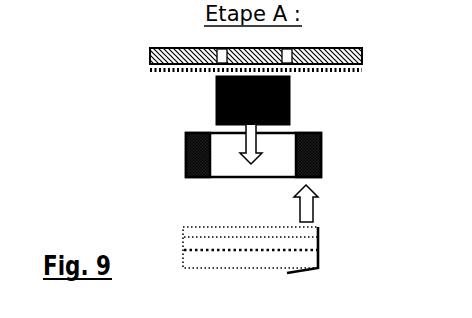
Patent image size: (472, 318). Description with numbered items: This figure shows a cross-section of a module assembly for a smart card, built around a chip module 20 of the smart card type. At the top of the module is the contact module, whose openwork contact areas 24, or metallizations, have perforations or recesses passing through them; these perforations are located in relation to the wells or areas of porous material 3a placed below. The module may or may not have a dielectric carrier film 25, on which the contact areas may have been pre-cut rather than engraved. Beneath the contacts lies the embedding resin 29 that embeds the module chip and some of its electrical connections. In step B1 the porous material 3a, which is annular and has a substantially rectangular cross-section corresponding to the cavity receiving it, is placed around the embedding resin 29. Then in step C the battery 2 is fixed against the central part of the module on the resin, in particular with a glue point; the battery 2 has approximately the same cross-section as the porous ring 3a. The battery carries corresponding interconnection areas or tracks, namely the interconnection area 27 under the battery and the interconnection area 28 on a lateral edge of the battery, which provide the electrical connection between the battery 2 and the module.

The chip module 20 is at (372, 43).
The openwork contact areas 24 is at (352, 45).
The dielectric carrier film 25 is at (149, 70).
The embedding resin 29 is at (215, 92).
The porous material 3a is at (186, 155).
The step B1 is at (254, 162).
The step C is at (320, 203).
The battery 2 is at (167, 240).
The interconnection area 28 is at (324, 232).
The interconnection area 27 is at (295, 277).